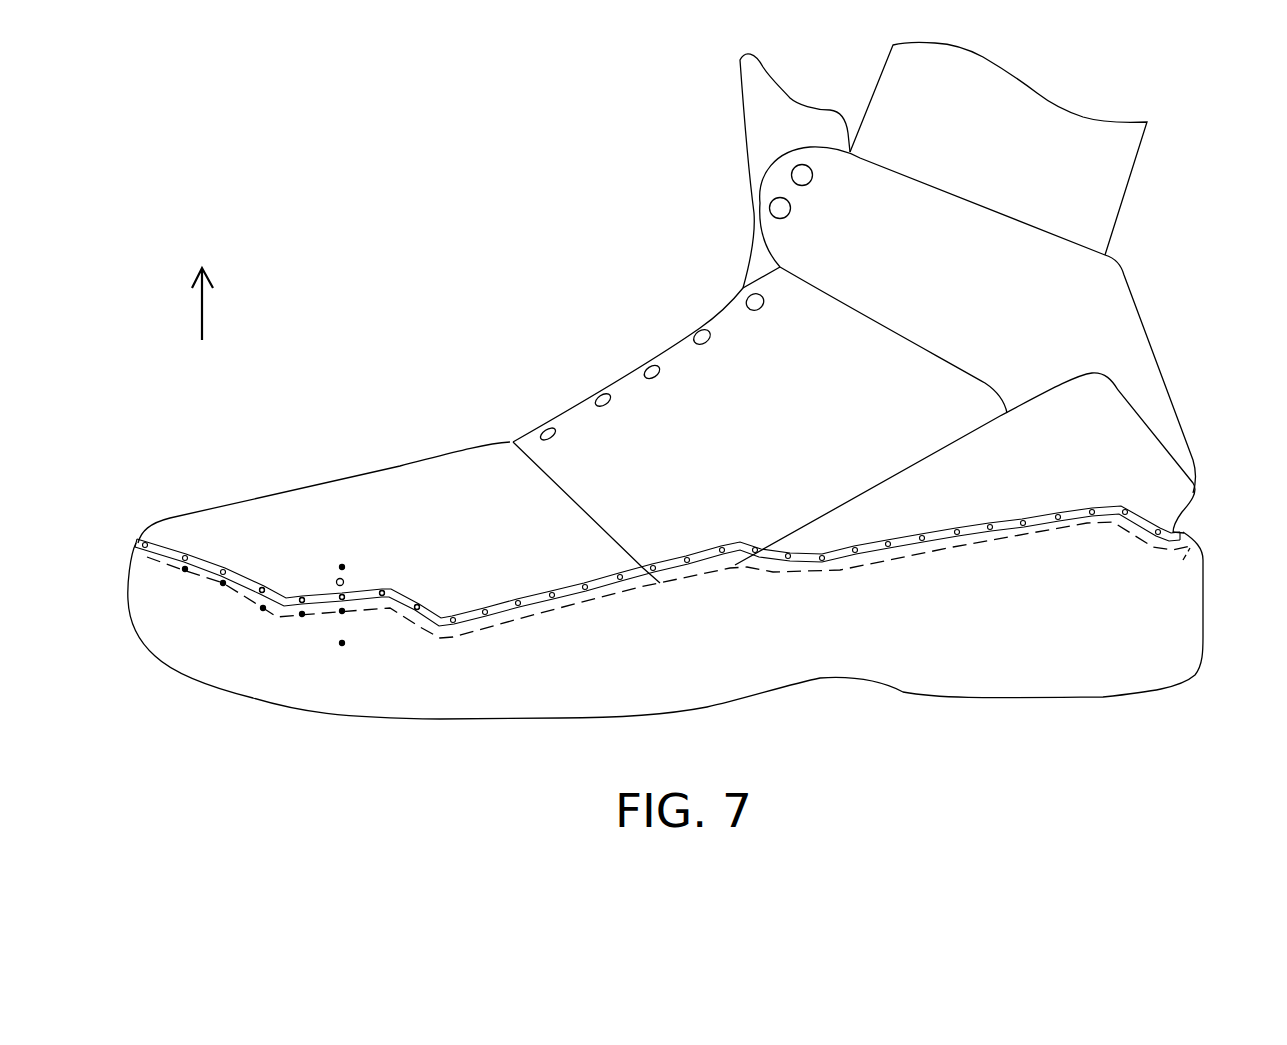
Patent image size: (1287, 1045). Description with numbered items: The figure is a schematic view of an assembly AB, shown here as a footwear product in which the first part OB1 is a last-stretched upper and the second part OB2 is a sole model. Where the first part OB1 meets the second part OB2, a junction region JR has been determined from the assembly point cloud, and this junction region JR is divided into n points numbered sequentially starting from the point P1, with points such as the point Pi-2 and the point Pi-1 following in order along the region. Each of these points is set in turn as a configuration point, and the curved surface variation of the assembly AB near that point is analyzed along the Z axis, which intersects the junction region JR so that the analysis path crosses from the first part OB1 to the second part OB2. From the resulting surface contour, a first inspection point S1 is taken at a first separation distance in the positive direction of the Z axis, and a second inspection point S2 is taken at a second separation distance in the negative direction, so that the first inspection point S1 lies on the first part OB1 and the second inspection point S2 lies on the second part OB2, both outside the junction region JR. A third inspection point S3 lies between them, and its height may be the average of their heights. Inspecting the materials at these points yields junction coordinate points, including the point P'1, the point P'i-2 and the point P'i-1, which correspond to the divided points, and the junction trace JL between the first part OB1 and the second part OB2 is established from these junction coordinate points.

The first part OB1 is at (1117, 338).
The second part OB2 is at (1103, 670).
The first inspection point S1 is at (344, 565).
The second inspection point S2 is at (343, 645).
The third inspection point S3 is at (338, 578).
The Pi-2 point Pi-2 is at (263, 587).
The Pi-1 point Pi-1 is at (302, 597).
The P1 point P1 is at (347, 596).
The junction coordinate point P'i-2 is at (229, 626).
The junction coordinate point P'i-1 is at (309, 643).
The junction coordinate point P'1 is at (367, 637).
The junction region JR is at (1184, 532).
The junction trace JL is at (1167, 545).
The assembly AB is at (1277, 687).
The Z axis Z is at (218, 304).